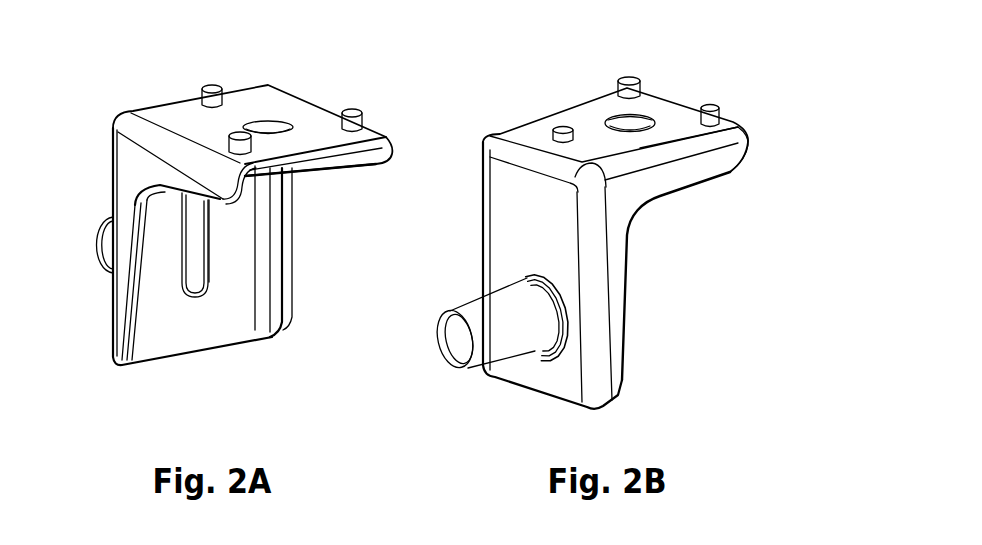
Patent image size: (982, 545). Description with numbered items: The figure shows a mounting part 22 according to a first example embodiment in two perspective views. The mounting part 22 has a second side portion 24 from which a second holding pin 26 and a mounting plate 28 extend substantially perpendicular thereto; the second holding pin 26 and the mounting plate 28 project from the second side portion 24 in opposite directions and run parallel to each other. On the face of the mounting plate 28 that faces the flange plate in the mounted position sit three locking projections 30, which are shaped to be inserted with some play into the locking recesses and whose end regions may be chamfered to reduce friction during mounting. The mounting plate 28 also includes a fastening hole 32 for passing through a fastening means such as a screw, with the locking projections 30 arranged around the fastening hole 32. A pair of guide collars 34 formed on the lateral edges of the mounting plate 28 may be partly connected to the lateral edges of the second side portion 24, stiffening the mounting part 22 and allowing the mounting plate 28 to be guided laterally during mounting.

In FIG. 2A, the mounting part 22 is at (386, 103).
In FIG. 2A, the second side portion 24 is at (240, 273).
In FIG. 2B, the second side portion 24 is at (513, 243).
In FIG. 2A, the second holding pin 26 is at (102, 248).
In FIG. 2B, the second holding pin 26 is at (457, 367).
In FIG. 2A, the mounting plate 28 is at (157, 116).
In FIG. 2B, the mounting plate 28 is at (545, 128).
In FIG. 2A, the locking projections 30 is at (352, 110).
In FIG. 2B, the locking projections 30 is at (703, 107).
In FIG. 2A, the fastening hole 32 is at (268, 127).
In FIG. 2B, the fastening hole 32 is at (632, 125).
In FIG. 2A, the guide collars 34 is at (388, 172).
In FIG. 2B, the guide collars 34 is at (732, 175).